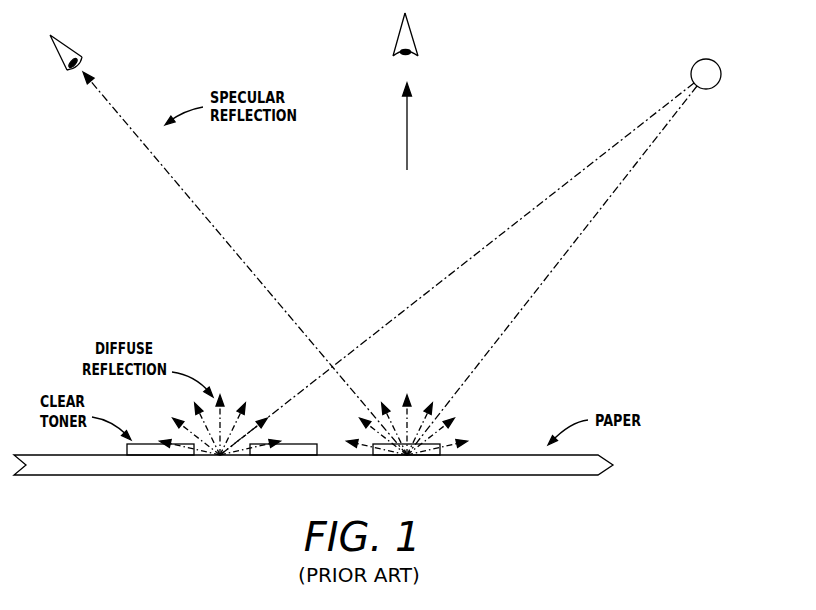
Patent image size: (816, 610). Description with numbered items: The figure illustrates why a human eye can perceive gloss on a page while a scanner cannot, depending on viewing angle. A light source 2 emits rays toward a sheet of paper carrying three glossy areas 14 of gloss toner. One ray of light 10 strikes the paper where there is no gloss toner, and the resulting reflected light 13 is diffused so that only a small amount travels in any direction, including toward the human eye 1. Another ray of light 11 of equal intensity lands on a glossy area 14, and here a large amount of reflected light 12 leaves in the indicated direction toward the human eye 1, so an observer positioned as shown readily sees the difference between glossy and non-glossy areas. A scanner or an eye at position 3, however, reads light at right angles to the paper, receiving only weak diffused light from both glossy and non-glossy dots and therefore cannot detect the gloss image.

The human eye 1 is at (70, 49).
The light source 2 is at (692, 63).
The scanner or human eye position 3 is at (413, 33).
The ray of light 10 is at (543, 204).
The ray of light 11 is at (587, 228).
The reflected light 12 is at (204, 205).
The reflected light 13 is at (235, 388).
The glossy areas 14 is at (150, 453).